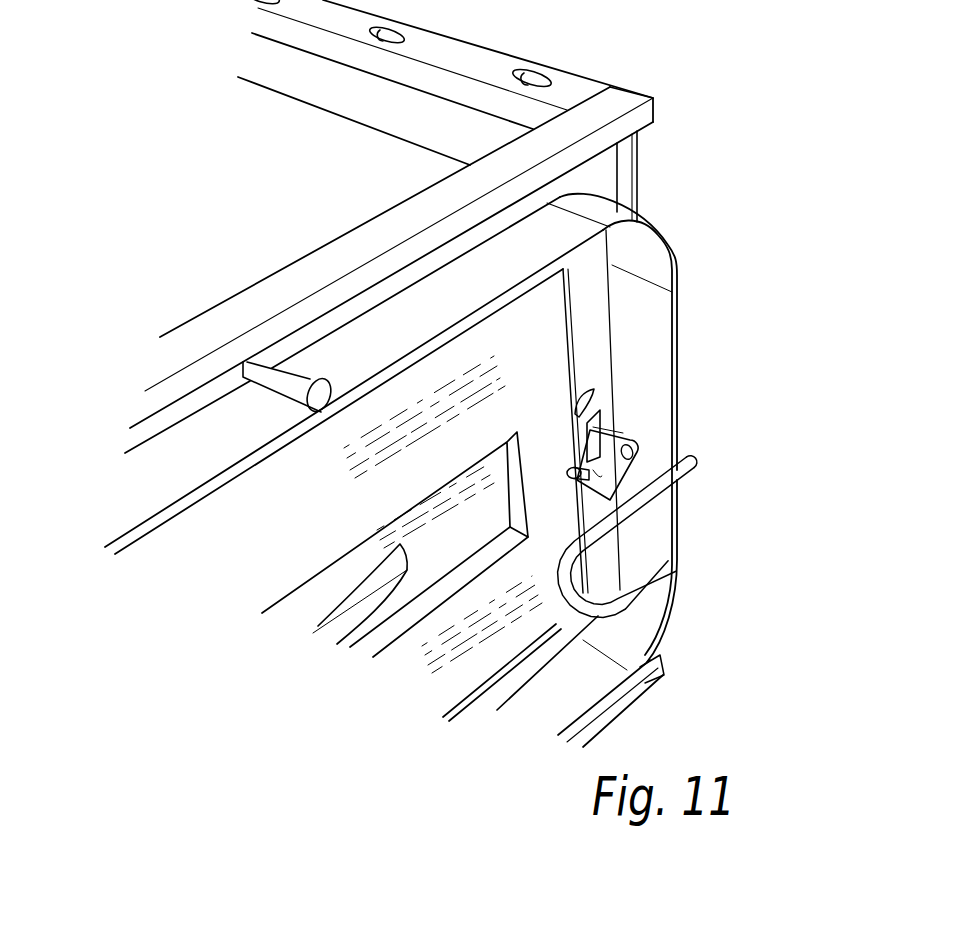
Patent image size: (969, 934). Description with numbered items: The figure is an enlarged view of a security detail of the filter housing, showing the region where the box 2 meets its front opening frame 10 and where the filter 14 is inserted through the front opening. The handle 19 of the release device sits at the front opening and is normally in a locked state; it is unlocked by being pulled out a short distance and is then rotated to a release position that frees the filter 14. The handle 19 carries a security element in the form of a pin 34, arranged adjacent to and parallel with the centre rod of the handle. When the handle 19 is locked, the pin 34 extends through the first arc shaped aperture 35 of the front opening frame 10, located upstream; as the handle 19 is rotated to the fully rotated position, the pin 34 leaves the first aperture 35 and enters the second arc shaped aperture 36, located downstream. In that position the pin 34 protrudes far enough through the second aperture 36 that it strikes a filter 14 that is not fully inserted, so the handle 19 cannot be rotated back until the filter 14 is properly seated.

The box 2 is at (644, 161).
The front opening frame 10 is at (593, 330).
The filter 14 is at (540, 318).
The handle 19 is at (667, 522).
The pin 34 is at (560, 478).
The first arc shaped aperture 35 is at (600, 397).
The second arc shaped aperture 36 is at (600, 477).